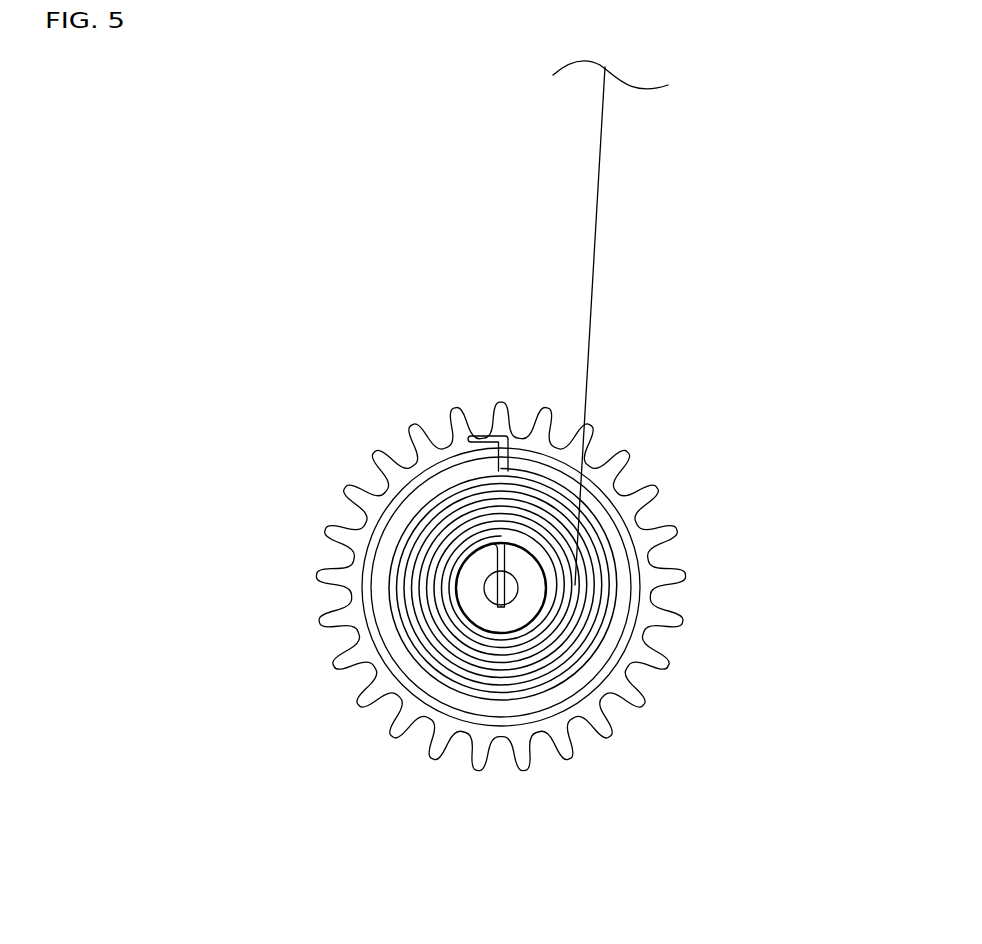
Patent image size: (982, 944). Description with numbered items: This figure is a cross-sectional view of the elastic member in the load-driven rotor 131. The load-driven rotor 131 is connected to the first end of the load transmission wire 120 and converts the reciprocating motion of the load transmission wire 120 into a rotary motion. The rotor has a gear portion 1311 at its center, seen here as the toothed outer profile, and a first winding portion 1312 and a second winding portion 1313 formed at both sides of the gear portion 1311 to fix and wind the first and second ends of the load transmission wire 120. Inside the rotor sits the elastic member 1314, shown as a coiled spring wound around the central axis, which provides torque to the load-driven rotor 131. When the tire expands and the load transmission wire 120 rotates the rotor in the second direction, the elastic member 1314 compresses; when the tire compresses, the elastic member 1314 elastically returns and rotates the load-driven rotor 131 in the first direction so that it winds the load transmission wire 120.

The load transmission wire 120 is at (586, 358).
The load-driven rotor 131 is at (326, 496).
The gear portion 1311 is at (316, 618).
The first winding portion 1312 is at (600, 495).
The second winding portion 1313 is at (501, 588).
The elastic member 1314 is at (417, 507).